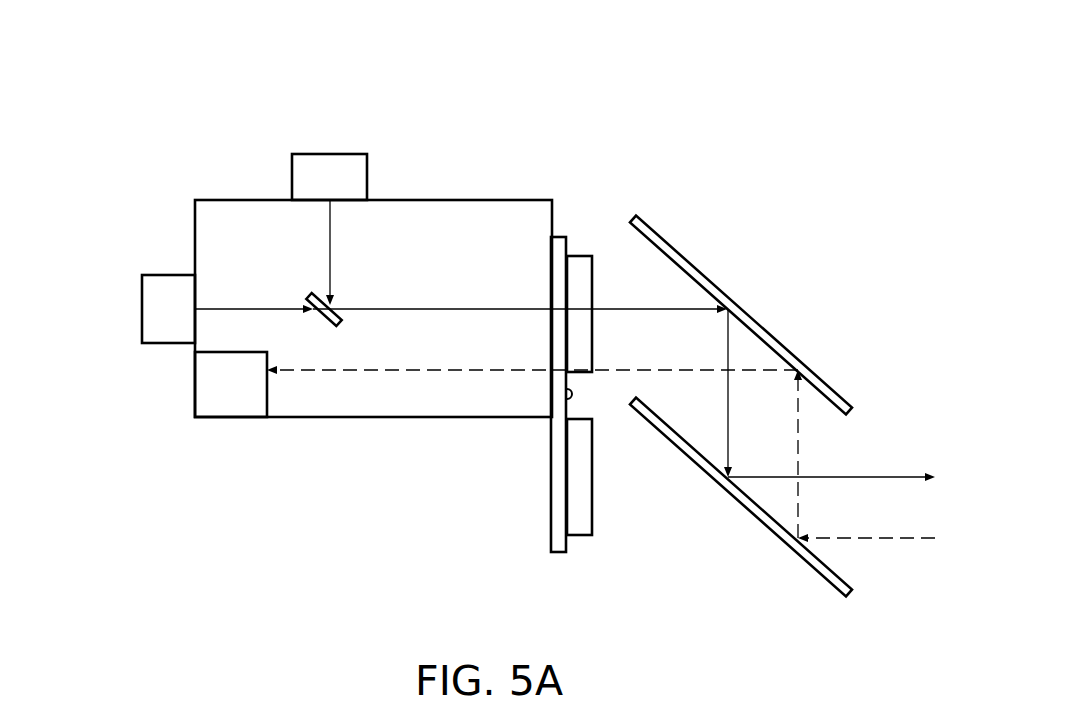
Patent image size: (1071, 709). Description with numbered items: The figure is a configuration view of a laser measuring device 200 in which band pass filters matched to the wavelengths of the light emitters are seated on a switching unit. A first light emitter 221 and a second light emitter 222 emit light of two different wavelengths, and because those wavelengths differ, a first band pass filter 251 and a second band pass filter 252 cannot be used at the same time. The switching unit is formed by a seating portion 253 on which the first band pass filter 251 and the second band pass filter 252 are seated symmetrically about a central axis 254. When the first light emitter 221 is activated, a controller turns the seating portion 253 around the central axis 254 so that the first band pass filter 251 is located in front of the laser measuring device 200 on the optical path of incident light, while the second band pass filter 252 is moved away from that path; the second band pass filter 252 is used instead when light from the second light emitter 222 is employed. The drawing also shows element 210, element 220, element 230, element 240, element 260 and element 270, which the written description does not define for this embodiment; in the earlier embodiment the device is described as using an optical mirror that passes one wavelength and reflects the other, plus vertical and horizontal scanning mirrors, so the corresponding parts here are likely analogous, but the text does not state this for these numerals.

The laser measuring device 200 is at (483, 30).
The housing 210 is at (437, 200).
The light source unit 220 is at (183, 79).
The first light emitter 221 is at (299, 167).
The second light emitter 222 is at (151, 288).
The light detector 230 is at (240, 397).
The beam splitter 240 is at (327, 327).
The first band pass filter 251 is at (578, 256).
The second band pass filter 252 is at (583, 537).
The seating portion 253 is at (550, 545).
The central axis 254 is at (572, 393).
The first mirror 260 is at (768, 328).
The second mirror 270 is at (735, 500).